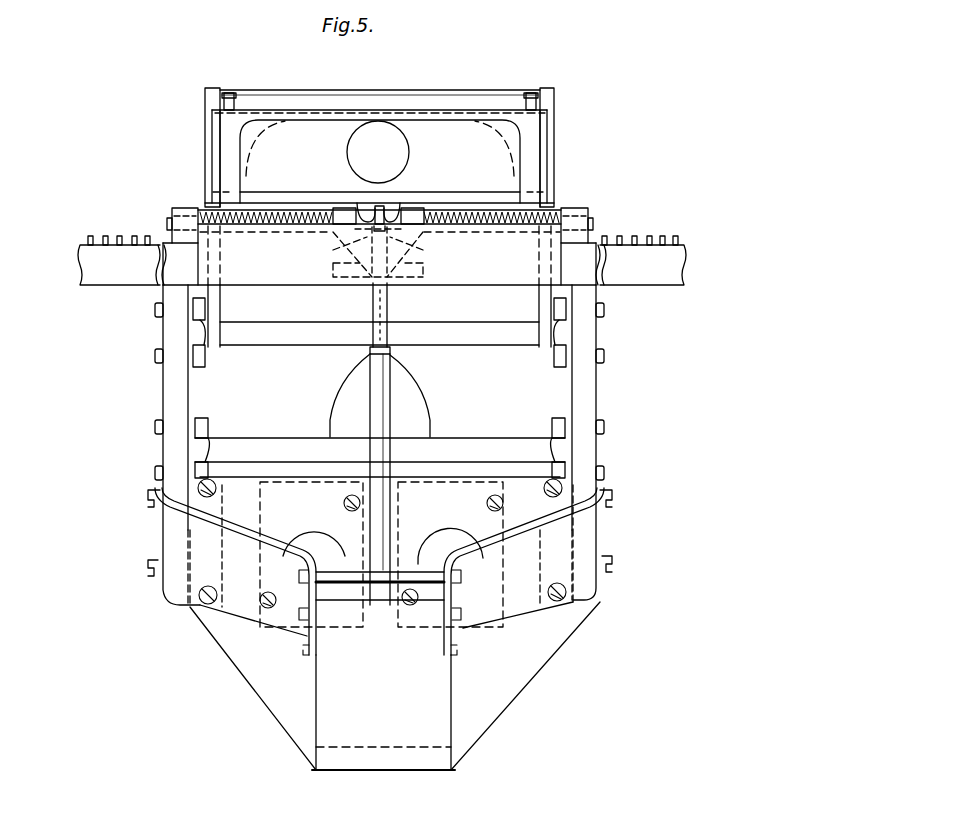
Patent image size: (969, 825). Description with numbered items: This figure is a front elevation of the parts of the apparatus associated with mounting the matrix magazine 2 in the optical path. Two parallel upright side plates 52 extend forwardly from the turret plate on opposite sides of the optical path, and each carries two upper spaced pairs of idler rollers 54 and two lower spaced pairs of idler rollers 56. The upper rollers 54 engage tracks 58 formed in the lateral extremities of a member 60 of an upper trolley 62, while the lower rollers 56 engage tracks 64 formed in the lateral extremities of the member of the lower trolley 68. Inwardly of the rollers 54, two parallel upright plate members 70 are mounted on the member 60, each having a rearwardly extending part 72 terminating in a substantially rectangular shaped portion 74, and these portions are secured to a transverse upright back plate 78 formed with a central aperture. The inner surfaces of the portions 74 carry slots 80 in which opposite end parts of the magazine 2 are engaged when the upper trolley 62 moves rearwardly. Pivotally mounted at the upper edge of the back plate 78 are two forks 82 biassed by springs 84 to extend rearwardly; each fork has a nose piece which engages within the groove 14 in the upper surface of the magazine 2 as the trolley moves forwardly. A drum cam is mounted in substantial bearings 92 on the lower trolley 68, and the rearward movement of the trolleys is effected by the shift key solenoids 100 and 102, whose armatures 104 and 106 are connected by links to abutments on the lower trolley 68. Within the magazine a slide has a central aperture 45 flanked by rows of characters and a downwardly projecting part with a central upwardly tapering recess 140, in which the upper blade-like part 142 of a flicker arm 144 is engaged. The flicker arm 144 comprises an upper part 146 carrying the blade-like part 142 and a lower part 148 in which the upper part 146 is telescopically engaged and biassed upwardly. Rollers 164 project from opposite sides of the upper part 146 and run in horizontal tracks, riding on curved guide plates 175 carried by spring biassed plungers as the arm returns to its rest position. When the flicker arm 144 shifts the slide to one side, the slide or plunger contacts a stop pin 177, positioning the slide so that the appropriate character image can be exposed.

The magazine 2 is at (395, 110).
The groove 14 is at (322, 110).
The central aperture 45 is at (400, 158).
The side plates 52 is at (180, 376).
The upper idler rollers 54 is at (193, 350).
The lower idler rollers 56 is at (190, 472).
The tracks 58 is at (205, 340).
The member 60 is at (447, 332).
The upper trolley 62 is at (312, 330).
The tracks 64 is at (204, 450).
The lower trolley 68 is at (292, 446).
The plate members 70 is at (205, 210).
The rearwardly extending part 72 is at (205, 180).
The rectangular shaped portion 74 is at (205, 160).
The back plate 78 is at (470, 95).
The slots 80 is at (212, 133).
The forks 82 is at (236, 98).
The springs 84 is at (240, 90).
The bearings 92 is at (424, 416).
The shift key solenoid 100 is at (470, 632).
The shift key solenoid 102 is at (338, 630).
The armature 104 is at (453, 522).
The armature 106 is at (314, 522).
The recess 140 is at (366, 210).
The blade-like part 142 is at (392, 208).
The flicker arm 144 is at (392, 372).
The upper part 146 is at (388, 295).
The lower part 148 is at (372, 384).
The rollers 164 is at (342, 254).
The curved guide plates 175 is at (425, 263).
The stop pins 177 is at (90, 236).